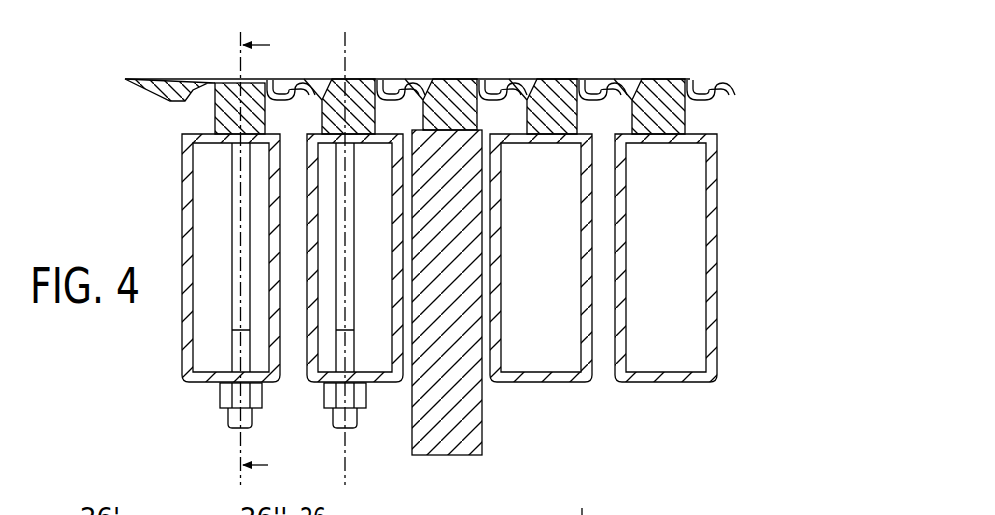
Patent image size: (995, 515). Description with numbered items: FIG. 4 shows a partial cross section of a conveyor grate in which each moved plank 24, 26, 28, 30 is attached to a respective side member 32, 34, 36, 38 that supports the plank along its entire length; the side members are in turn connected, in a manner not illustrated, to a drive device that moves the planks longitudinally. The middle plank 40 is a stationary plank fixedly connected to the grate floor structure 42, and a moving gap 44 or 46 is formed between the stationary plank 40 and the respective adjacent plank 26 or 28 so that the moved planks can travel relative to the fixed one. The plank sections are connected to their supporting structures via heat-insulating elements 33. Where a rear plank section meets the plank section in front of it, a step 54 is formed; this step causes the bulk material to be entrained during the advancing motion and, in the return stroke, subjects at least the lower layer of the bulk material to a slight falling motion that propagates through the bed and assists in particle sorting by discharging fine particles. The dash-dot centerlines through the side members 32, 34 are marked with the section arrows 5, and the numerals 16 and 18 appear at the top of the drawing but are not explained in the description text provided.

The section line 5- 5 is at (263, 252).
The mounting rail 16 is at (407, 39).
The fastener axis 18 is at (287, 242).
The moved plank 24 is at (158, 86).
The moved plank 26 is at (263, 87).
The moved plank 28 is at (487, 84).
The moved plank 30 is at (586, 84).
The side member 32 is at (183, 380).
The heat-insulating element 33 is at (235, 125).
The side member 34 is at (313, 383).
The side member 36 is at (524, 380).
The side member 38 is at (638, 380).
The stationary plank 40 is at (387, 81).
The grate floor structure 42 is at (438, 427).
The moving gap 44 is at (349, 92).
The moving gap 46 is at (461, 93).
The step 54 is at (582, 498).